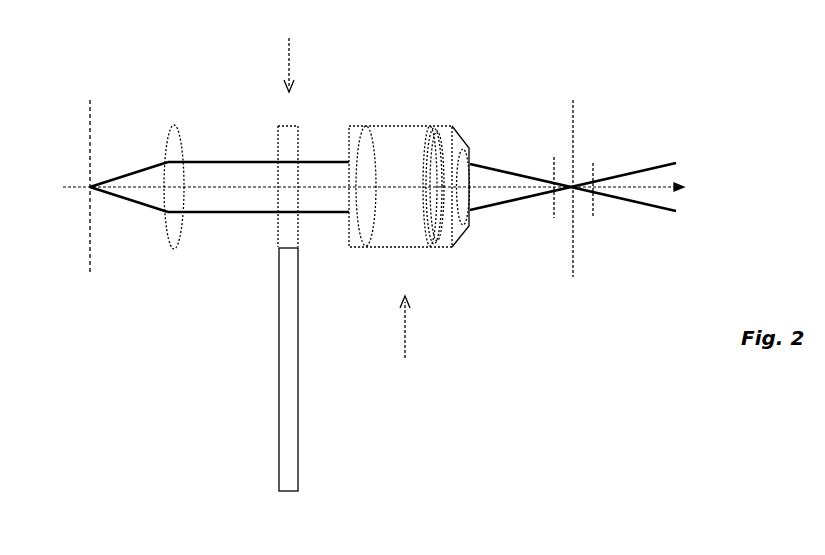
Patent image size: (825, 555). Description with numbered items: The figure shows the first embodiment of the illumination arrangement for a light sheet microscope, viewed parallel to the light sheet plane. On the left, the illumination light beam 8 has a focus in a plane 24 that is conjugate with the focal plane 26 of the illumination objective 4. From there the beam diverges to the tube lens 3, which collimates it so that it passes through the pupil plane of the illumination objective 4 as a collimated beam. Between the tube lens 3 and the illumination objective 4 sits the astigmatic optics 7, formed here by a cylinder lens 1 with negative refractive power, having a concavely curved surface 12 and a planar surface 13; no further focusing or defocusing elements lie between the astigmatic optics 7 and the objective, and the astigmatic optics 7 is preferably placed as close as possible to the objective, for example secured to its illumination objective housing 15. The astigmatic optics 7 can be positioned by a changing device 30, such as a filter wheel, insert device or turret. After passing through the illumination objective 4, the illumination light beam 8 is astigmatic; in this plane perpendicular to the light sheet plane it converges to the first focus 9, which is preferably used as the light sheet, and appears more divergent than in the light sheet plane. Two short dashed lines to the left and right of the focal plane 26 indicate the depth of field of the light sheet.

The cylinder lens 1 is at (288, 236).
The tube lens 3 is at (181, 222).
The illumination objective 4 is at (405, 342).
The astigmatic optics 7 is at (289, 52).
The illumination light beam 8 is at (138, 193).
The first focus 9 is at (586, 163).
The concavely curved surface 12 is at (298, 141).
The planar surface 13 is at (277, 143).
The illumination objective housing 15 is at (395, 125).
The plane conjugate with the focal plane 24 is at (90, 146).
The focal plane 26 is at (573, 118).
The changing device 30 is at (293, 402).